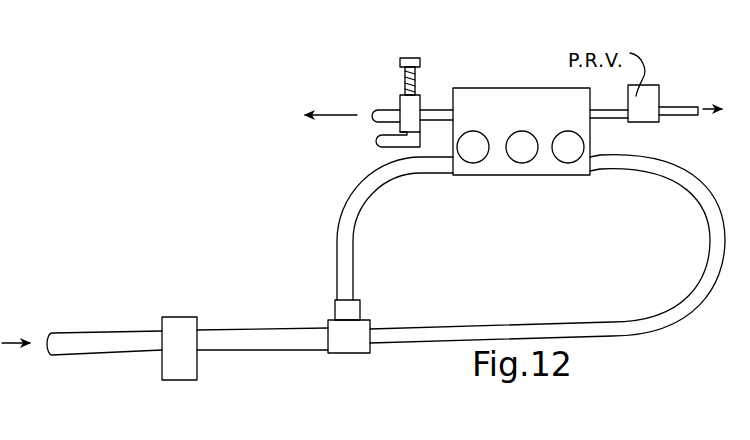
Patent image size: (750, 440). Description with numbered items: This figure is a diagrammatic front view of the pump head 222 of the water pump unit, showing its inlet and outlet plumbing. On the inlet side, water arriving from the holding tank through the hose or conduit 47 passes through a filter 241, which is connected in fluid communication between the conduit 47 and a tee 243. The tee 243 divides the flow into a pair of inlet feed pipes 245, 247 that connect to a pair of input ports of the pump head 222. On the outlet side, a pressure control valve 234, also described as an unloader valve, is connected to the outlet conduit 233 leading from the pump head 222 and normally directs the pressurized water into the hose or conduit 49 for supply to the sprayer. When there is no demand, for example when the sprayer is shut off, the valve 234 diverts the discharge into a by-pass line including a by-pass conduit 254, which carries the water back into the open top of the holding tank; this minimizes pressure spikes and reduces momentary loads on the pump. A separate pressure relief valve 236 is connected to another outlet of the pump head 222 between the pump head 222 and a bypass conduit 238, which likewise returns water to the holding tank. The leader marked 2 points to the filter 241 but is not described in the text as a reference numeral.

The filter indicator 2 is at (184, 384).
The hose or conduit 47 is at (80, 333).
The hose or conduit 49 is at (394, 108).
The pump head 222 is at (546, 84).
The outlet conduit 233 is at (430, 108).
The pressure control valve 234 is at (422, 66).
The pressure relief valve 236 is at (667, 27).
The bypass conduit 238 is at (680, 117).
The filter 241 is at (178, 317).
The tee 243 is at (352, 355).
The inlet feed pipe 245 is at (364, 228).
The inlet feed pipe 247 is at (452, 320).
The by-pass conduit 254 is at (390, 147).